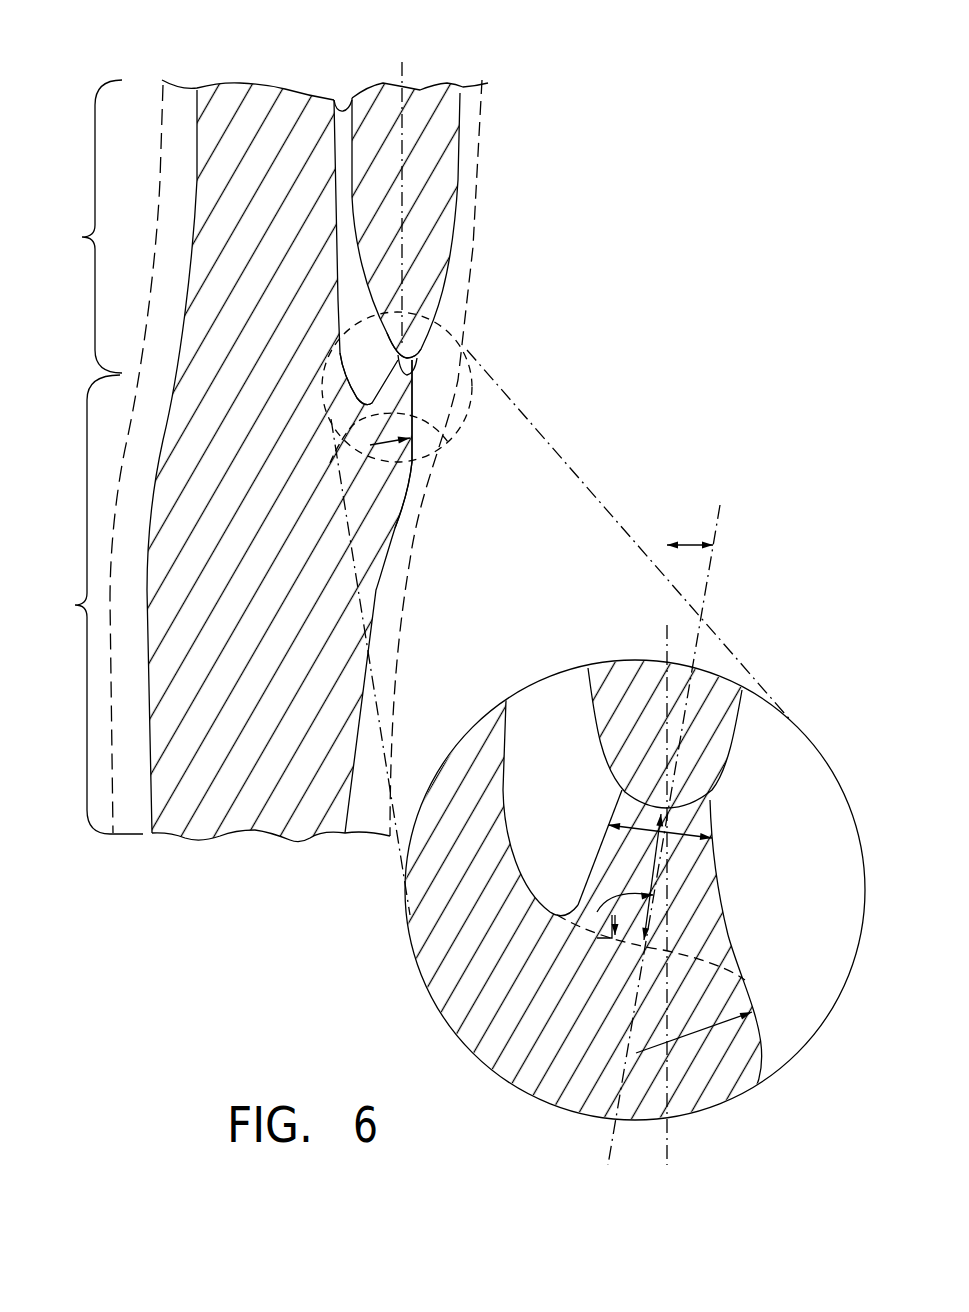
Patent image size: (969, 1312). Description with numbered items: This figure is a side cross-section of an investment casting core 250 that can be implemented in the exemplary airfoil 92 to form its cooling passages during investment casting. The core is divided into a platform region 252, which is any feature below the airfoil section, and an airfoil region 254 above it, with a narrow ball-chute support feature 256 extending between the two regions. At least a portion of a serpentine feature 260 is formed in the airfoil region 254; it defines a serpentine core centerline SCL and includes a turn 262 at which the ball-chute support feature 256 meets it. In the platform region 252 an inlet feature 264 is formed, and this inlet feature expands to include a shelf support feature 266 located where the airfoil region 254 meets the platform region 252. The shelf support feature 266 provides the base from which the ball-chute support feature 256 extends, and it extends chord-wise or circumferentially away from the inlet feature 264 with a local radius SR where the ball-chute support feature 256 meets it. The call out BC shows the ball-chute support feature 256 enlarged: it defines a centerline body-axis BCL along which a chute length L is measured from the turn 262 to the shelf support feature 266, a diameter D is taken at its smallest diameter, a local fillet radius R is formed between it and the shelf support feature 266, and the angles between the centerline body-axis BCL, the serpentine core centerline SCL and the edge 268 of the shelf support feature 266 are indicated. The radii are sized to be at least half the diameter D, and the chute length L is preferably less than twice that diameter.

The investment casting core 250 is at (264, 116).
The platform region 252 is at (86, 604).
The airfoil region 254 is at (79, 226).
The ball-chute support feature 256 is at (393, 382).
The serpentine feature 260 is at (422, 168).
The turn 262 is at (445, 358).
The inlet feature 264 is at (237, 770).
The shelf support feature 266 is at (375, 431).
The edge 268 is at (330, 463).
The airfoil 92 is at (488, 251).
The serpentine core centerline SCL is at (407, 71).
The centerline body-axis BCL is at (710, 575).
The call out BC is at (430, 988).
The local fillet radius R is at (365, 401).
The local radius SR is at (405, 458).
The chute length L is at (653, 873).
The diameter D is at (685, 830).